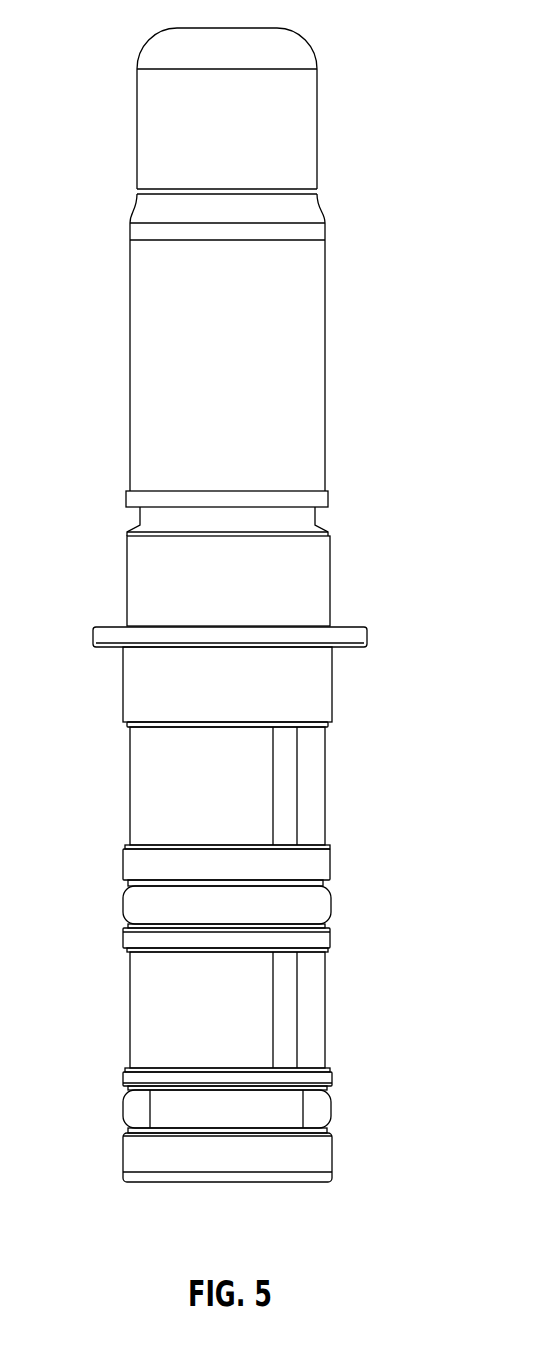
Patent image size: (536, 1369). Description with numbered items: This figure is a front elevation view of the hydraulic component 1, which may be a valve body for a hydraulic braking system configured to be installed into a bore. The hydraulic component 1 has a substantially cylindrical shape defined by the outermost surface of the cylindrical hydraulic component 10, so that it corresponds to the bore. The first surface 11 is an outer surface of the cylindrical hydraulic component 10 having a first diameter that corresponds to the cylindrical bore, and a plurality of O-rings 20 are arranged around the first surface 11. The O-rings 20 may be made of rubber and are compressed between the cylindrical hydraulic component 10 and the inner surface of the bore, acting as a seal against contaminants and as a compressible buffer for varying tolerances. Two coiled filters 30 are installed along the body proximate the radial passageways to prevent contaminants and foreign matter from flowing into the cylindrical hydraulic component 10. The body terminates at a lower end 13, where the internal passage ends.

The hydraulic component 1 is at (373, 217).
The cylindrical hydraulic component 10 is at (313, 588).
The first surface 11 is at (135, 704).
The lower end 13 is at (170, 1183).
The O-ring 20 is at (312, 905).
The coiled filter 30 is at (142, 822).